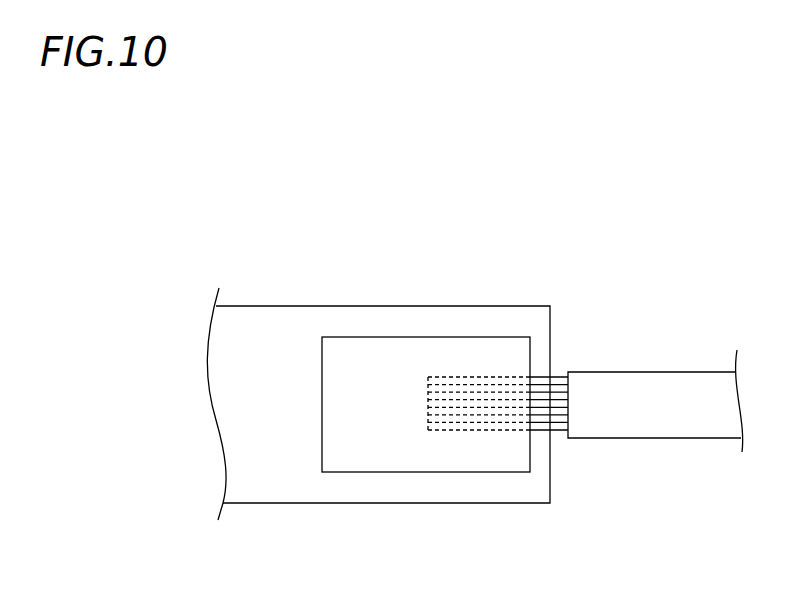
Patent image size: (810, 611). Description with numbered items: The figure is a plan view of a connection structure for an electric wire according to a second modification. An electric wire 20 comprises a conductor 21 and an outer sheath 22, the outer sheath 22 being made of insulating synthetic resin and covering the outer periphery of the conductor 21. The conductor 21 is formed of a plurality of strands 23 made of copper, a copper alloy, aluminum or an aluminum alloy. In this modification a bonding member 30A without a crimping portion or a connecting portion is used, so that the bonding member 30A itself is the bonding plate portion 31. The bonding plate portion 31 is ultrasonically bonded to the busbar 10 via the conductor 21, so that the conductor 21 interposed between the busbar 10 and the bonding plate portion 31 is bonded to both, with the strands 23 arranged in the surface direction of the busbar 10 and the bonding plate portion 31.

The busbar 10 is at (285, 506).
The electric wire 20 is at (676, 363).
The conductor 21 is at (499, 377).
The outer sheath 22 is at (612, 385).
The strands 23 is at (473, 377).
The bonding member 30A is at (374, 335).
The bonding plate portion 31 is at (375, 453).